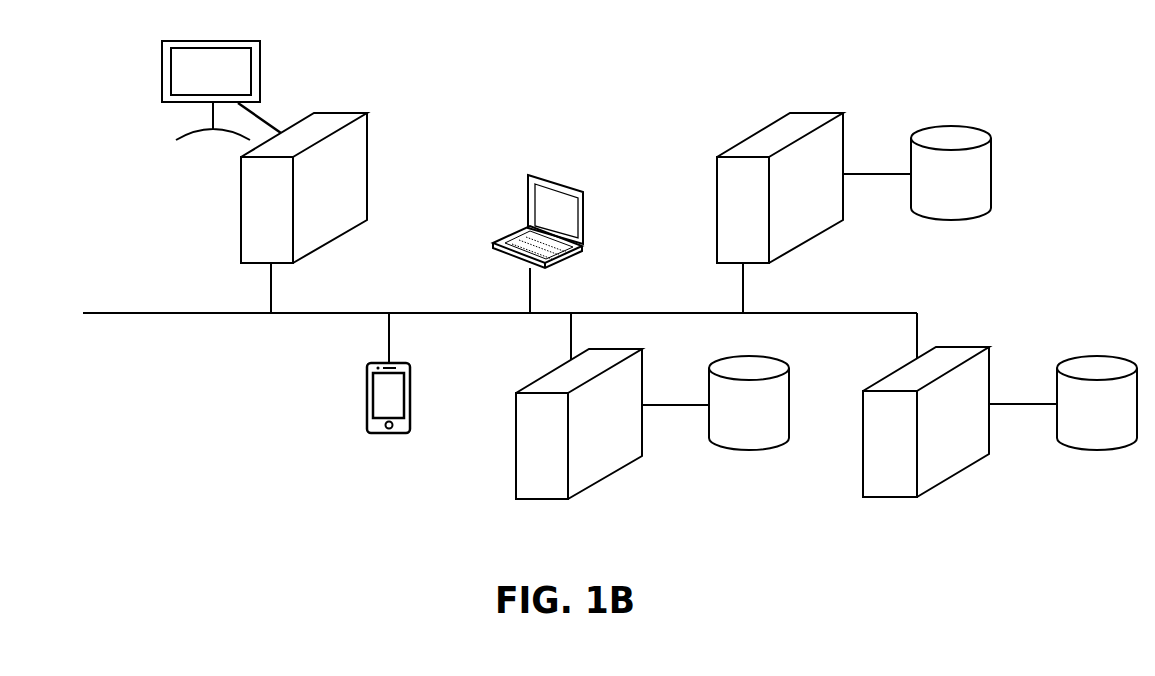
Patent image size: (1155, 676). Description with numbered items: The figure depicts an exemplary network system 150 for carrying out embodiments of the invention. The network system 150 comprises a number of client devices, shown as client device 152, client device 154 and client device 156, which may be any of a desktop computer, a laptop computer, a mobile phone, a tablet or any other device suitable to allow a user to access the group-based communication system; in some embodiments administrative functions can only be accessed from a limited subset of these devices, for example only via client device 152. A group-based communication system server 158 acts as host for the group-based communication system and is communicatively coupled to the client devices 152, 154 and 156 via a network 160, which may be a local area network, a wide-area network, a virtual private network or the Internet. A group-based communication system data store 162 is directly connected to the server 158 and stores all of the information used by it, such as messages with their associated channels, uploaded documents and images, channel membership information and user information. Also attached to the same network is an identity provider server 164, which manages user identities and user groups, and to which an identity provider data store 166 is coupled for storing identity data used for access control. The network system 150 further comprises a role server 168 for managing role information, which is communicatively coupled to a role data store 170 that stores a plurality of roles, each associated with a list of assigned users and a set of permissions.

The network system 150 is at (249, 476).
The client device 152 is at (241, 212).
The client device 154 is at (528, 205).
The client device 156 is at (412, 397).
The group-based communication system server 158 is at (516, 455).
The network 160 is at (122, 314).
The group-based communication system data store 162 is at (748, 443).
The identity provider server 164 is at (717, 185).
The identity provider data store 166 is at (948, 212).
The role server 168 is at (875, 499).
The role data store 170 is at (1095, 445).